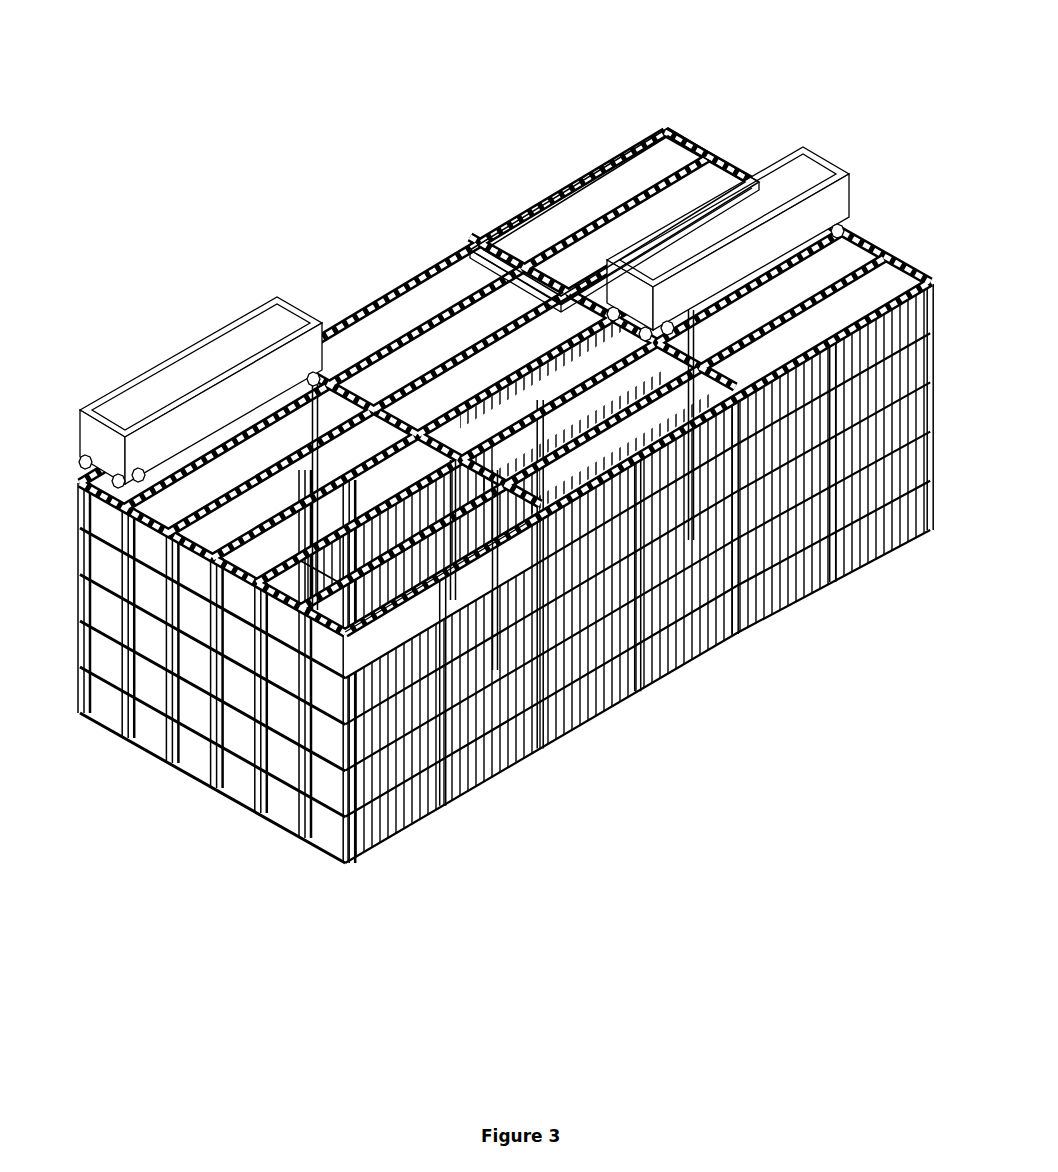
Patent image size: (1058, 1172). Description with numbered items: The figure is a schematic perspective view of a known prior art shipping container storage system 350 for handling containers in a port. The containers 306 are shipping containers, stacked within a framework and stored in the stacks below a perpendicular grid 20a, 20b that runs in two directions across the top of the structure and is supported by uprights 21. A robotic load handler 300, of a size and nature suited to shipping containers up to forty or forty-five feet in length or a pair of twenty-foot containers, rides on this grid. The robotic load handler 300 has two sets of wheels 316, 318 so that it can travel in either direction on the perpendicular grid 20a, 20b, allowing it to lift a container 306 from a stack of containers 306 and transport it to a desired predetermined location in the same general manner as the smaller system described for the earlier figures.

The system 350 is at (474, 443).
The uprights 21 is at (733, 650).
The robotic load handler 300 is at (201, 390).
The containers 306 is at (474, 569).
The wheels 316 is at (313, 373).
The wheels 318 is at (80, 466).
The grid 20a is at (552, 183).
The grid 20b is at (700, 128).